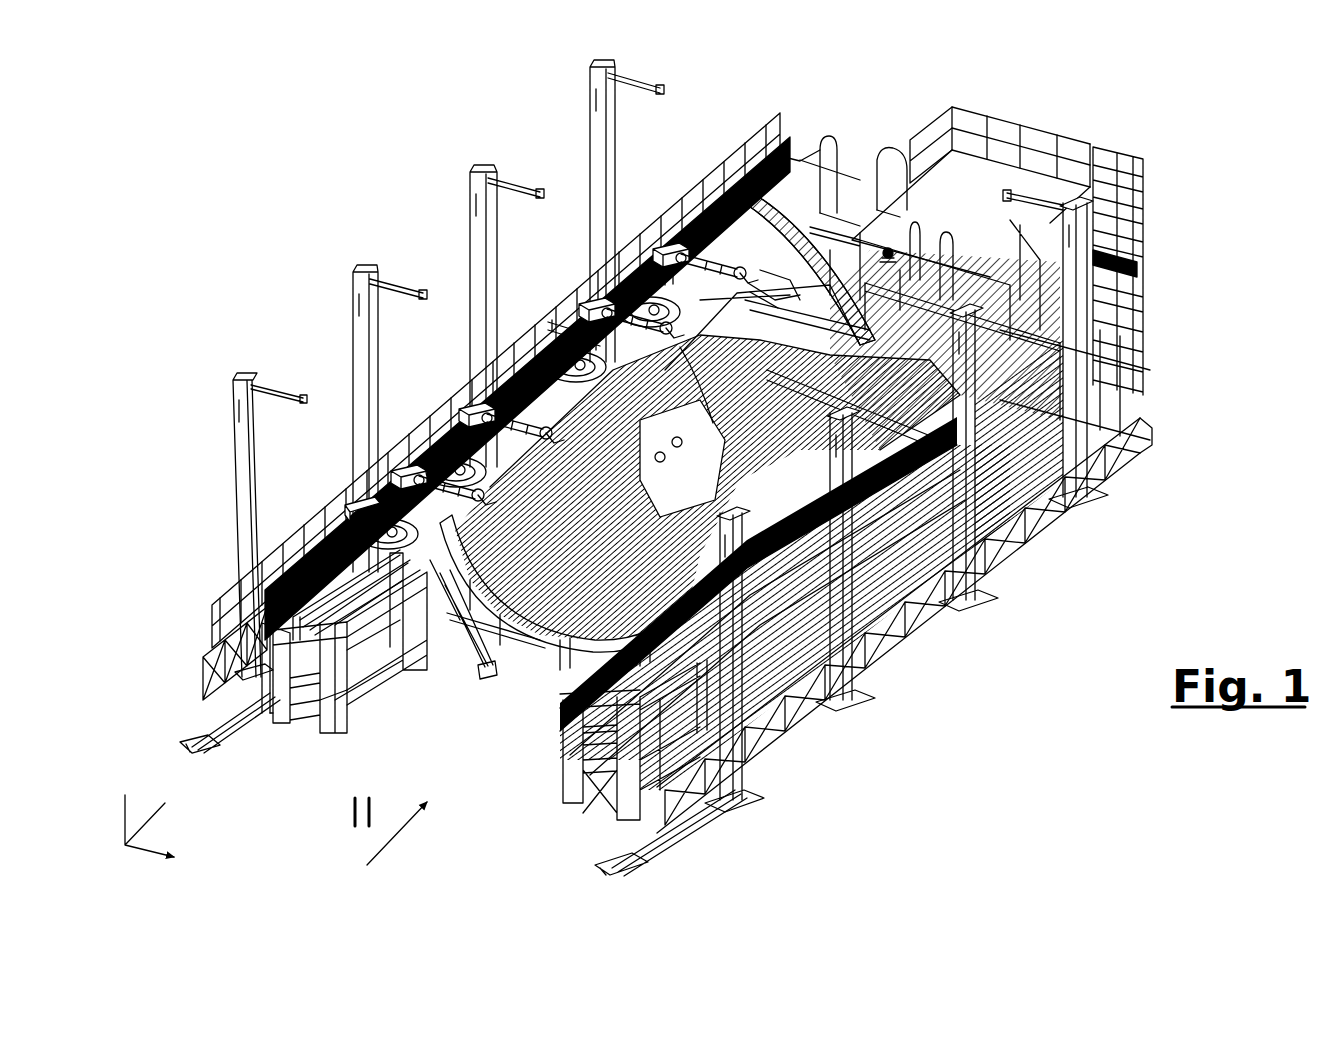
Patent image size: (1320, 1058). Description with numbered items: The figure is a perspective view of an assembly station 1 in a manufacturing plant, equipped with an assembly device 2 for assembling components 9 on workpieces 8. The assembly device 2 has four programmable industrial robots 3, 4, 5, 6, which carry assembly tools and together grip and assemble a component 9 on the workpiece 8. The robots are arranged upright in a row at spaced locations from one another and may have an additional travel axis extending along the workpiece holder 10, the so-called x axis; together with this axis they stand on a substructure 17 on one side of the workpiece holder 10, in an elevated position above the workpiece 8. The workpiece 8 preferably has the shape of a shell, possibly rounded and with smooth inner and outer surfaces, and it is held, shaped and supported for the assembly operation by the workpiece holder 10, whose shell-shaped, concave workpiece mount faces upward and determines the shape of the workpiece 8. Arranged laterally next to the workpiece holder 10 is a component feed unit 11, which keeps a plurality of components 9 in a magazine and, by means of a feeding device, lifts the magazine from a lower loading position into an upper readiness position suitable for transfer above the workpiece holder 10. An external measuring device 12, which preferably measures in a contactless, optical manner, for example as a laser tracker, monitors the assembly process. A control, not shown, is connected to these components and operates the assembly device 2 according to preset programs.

The assembly station 1 is at (1185, 238).
The assembly device 2 is at (560, 667).
The industrial robot 3 is at (397, 473).
The industrial robot 4 is at (470, 413).
The industrial robot 5 is at (593, 310).
The industrial robot 6 is at (667, 253).
The workpiece 8 is at (560, 322).
The component 9 is at (493, 378).
The workpiece holder 10 is at (477, 650).
The component feed unit 11 is at (183, 675).
The external measuring device 12 is at (888, 246).
The substructure 17 is at (298, 710).